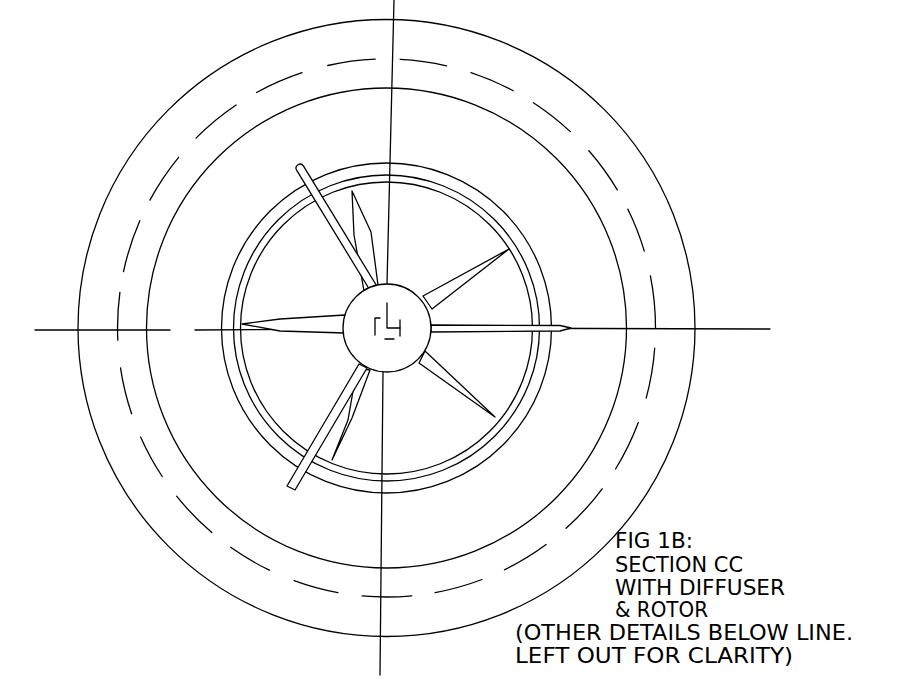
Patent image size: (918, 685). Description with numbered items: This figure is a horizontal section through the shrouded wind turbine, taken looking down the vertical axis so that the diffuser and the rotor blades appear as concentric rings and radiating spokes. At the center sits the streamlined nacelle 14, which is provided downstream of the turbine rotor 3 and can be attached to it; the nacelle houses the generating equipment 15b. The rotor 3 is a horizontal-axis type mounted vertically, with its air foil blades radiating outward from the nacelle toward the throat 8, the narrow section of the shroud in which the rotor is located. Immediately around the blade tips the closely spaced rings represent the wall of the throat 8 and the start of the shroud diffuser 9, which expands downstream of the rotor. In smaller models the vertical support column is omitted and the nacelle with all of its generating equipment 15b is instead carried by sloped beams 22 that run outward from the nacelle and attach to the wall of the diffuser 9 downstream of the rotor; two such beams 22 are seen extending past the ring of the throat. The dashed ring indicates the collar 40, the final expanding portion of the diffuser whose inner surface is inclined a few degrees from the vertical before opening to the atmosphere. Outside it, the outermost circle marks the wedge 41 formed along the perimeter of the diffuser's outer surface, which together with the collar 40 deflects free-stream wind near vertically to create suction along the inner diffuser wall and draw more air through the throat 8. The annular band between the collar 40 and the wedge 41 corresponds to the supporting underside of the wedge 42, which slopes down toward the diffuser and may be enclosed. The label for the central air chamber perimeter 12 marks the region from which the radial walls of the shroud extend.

The turbine rotor 3 is at (406, 325).
The throat 8 is at (387, 328).
The shroud diffuser 9 is at (561, 419).
The central air chamber perimeter 12 is at (466, 312).
The streamlined nacelle 14 is at (396, 307).
The generating equipment 15b is at (355, 338).
The sloped beams 22 is at (332, 347).
The collar 40 is at (429, 328).
The wedge 41 is at (404, 328).
The underside of the wedge 42 is at (467, 328).